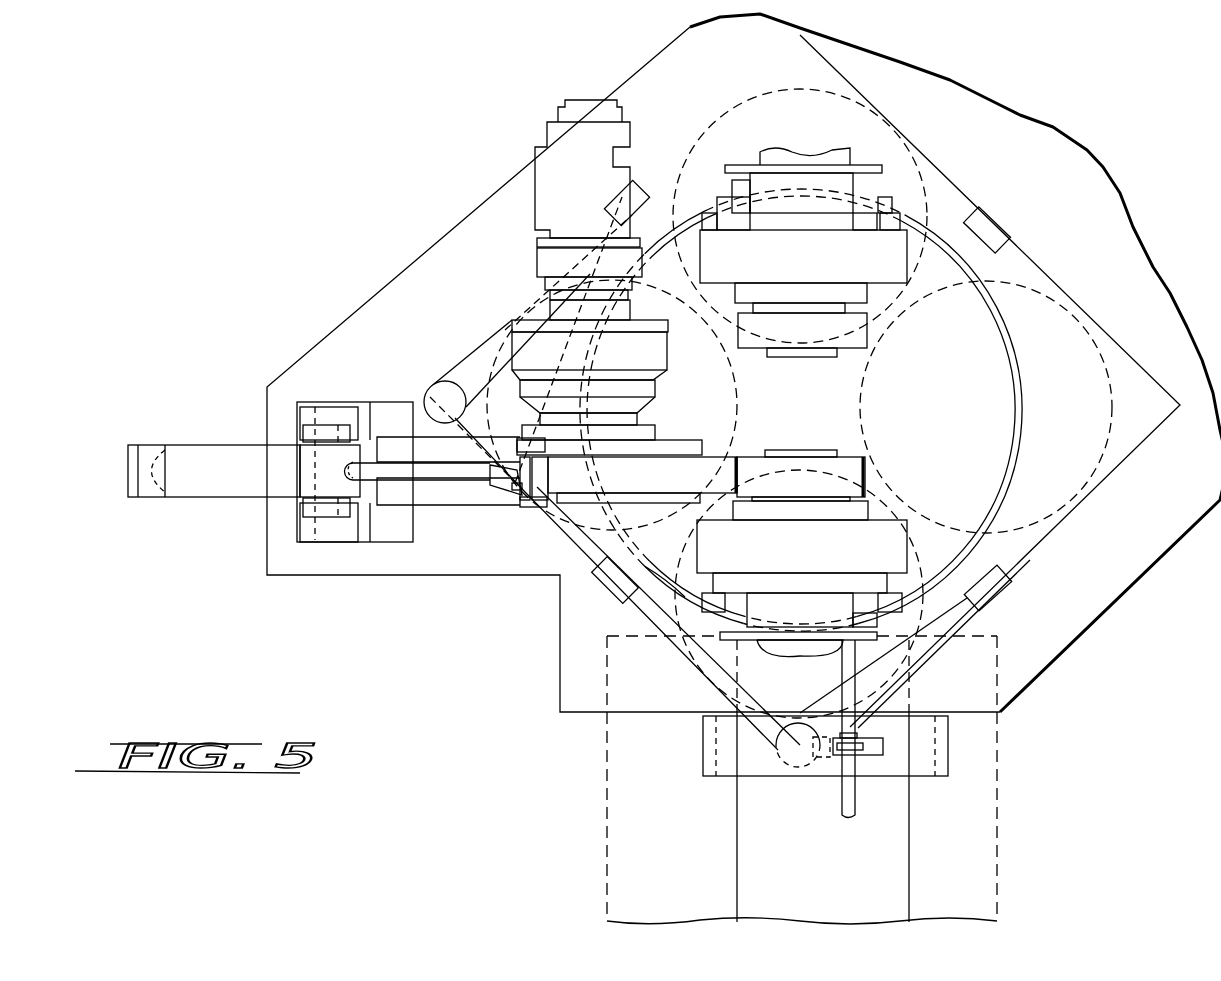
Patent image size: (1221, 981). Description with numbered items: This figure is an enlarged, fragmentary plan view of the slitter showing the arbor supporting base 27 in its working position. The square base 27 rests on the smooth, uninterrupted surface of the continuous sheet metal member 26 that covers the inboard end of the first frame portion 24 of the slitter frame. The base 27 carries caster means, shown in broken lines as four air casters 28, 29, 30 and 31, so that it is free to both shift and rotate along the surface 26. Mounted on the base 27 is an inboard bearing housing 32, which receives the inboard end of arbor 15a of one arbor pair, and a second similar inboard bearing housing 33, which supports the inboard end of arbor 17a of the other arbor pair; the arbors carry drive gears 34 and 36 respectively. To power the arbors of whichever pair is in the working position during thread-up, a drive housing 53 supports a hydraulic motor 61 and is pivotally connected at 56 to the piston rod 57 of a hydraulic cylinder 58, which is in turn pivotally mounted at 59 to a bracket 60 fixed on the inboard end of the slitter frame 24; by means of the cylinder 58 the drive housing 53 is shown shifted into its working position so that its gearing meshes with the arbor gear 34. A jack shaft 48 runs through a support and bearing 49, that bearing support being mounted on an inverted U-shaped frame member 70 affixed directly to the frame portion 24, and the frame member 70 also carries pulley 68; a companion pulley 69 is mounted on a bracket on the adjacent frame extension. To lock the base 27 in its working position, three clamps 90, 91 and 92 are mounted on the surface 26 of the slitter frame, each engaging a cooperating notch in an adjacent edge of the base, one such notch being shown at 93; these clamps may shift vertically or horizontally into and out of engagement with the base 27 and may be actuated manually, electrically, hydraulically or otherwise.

The arbor 15a is at (800, 652).
The arbor 17a is at (848, 157).
The first frame portion 24 is at (987, 831).
The continuous sheet metal member 26 is at (1115, 228).
The base 27 is at (1030, 262).
The air caster 28 is at (1115, 400).
The air caster 29 is at (890, 74).
The air caster 30 is at (585, 520).
The air caster 31 is at (905, 607).
The inboard bearing housing 32 is at (802, 546).
The inboard bearing housing 33 is at (803, 256).
The drive gear 34 is at (867, 463).
The drive gear 36 is at (853, 340).
The shaft 48 is at (850, 798).
The support and bearing 49 is at (862, 745).
The drive housing 53 is at (670, 448).
The pivotal connection 56 is at (522, 500).
The piston rod 57 is at (440, 475).
The hydraulic cylinder 58 is at (214, 491).
The pivotal mounting 59 is at (325, 503).
The bracket 60 is at (333, 410).
The hydraulic motor 61 is at (538, 170).
The pulley 68 is at (786, 768).
The pulley 69 is at (430, 388).
The inverted U-shaped frame member 70 is at (753, 763).
The clamp 90 is at (1000, 590).
The clamp 91 is at (598, 590).
The clamp 92 is at (632, 186).
The notch 93 is at (990, 226).